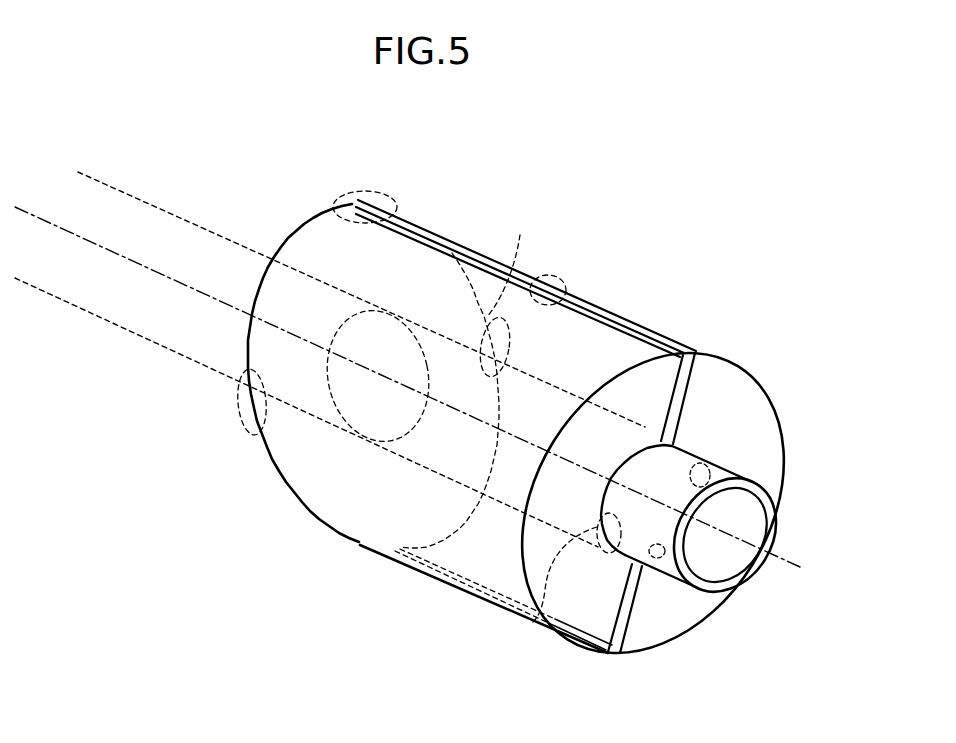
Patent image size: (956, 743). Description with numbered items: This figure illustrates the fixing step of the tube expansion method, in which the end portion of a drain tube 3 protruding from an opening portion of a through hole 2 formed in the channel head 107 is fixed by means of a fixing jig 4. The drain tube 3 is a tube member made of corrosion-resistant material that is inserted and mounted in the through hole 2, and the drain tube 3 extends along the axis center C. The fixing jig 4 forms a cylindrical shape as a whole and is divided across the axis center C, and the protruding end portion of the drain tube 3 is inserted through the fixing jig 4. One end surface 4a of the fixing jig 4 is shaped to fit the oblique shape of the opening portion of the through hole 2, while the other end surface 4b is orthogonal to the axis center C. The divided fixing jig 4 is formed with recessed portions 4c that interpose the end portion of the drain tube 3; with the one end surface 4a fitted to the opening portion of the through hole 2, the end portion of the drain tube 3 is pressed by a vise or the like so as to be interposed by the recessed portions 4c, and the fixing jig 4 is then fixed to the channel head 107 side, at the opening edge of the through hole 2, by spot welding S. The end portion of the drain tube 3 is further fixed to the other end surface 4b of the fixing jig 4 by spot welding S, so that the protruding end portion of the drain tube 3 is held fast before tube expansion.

The channel head 107 is at (184, 174).
The through hole 2 is at (201, 230).
The axis center C is at (773, 557).
The drain tube 3 is at (775, 545).
The fixing jig 4 is at (647, 320).
The one end surface 4a is at (485, 315).
The other end surface 4b is at (735, 380).
The recessed portions 4c is at (628, 470).
The spot welding S is at (365, 192).